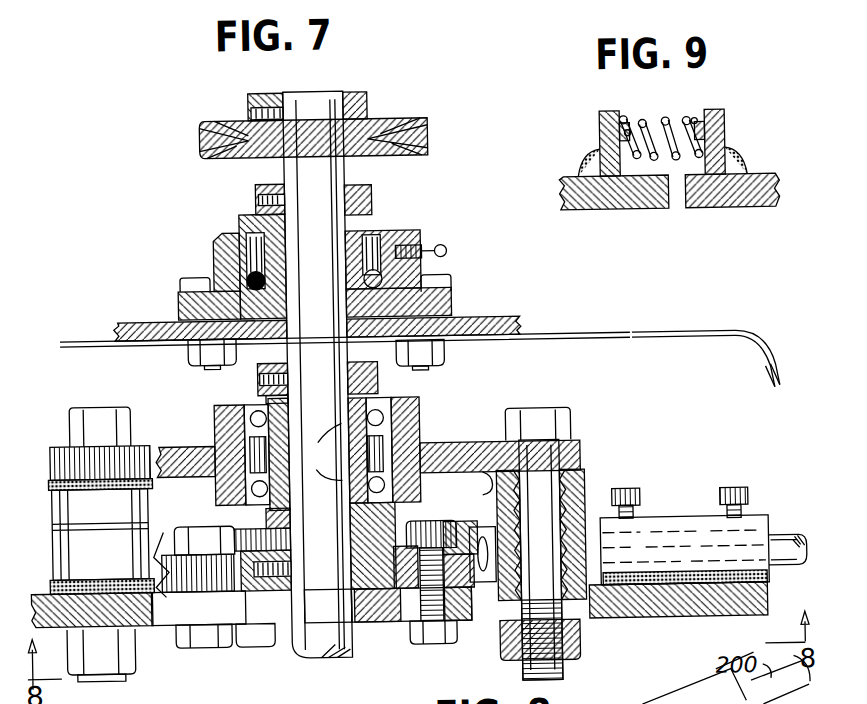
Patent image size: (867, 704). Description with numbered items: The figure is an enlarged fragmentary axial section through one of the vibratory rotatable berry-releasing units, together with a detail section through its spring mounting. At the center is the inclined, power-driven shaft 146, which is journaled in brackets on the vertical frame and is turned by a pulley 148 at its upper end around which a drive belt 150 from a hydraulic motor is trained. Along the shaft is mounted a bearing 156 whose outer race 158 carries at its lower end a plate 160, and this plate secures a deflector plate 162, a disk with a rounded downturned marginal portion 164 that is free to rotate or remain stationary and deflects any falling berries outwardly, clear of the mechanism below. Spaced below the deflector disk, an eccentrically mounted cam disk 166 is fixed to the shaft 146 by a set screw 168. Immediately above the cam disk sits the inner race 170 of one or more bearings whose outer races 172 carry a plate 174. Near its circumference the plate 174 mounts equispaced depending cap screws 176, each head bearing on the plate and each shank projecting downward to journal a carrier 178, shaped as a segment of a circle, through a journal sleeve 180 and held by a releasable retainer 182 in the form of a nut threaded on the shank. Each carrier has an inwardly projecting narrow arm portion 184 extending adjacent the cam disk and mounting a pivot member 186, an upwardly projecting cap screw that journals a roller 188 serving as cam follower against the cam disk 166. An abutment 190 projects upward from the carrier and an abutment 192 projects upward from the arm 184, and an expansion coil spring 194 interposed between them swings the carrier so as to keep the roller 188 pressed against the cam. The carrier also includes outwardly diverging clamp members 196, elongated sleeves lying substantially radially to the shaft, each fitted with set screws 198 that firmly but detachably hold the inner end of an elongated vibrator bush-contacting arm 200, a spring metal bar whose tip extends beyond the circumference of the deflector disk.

In FIG. 7, the shaft 146 is at (318, 104).
In FIG. 7, the pulley 148 is at (398, 122).
In FIG. 7, the drive belt 150 is at (432, 137).
In FIG. 7, the bearing 156 is at (376, 234).
In FIG. 7, the outer race 158 is at (238, 232).
In FIG. 7, the plate 160 is at (492, 322).
In FIG. 7, the deflector plate 162 is at (578, 336).
In FIG. 7, the rounded downturned marginal portion 164 is at (800, 368).
In FIG. 7, the cam disk 166 is at (374, 588).
In FIG. 7, the set screw 168 is at (297, 571).
In FIG. 7, the inner race 170 is at (319, 452).
In FIG. 7, the outer race 172 is at (383, 412).
In FIG. 7, the plate 174 is at (452, 446).
In FIG. 7, the cap screw 176 is at (534, 450).
In FIG. 7, the carrier 178 is at (124, 620).
In FIG. 9, the carrier 178 is at (585, 204).
In FIG. 7, the journal sleeve 180 is at (578, 616).
In FIG. 7, the releasable retainer 182 is at (508, 670).
In FIG. 7, the arm portion 184 is at (202, 622).
In FIG. 9, the arm portion 184 is at (748, 204).
In FIG. 7, the pivot member 186 is at (300, 662).
In FIG. 7, the roller 188 is at (190, 528).
In FIG. 9, the abutment 190 is at (600, 128).
In FIG. 9, the abutment 192 is at (725, 120).
In FIG. 7, the expansion coil spring 194 is at (161, 530).
In FIG. 9, the expansion coil spring 194 is at (664, 118).
In FIG. 7, the clamp member 196 is at (666, 548).
In FIG. 7, the set screw 198 is at (623, 494).
In FIG. 7, the vibrator bush-contacting arm 200 is at (786, 546).